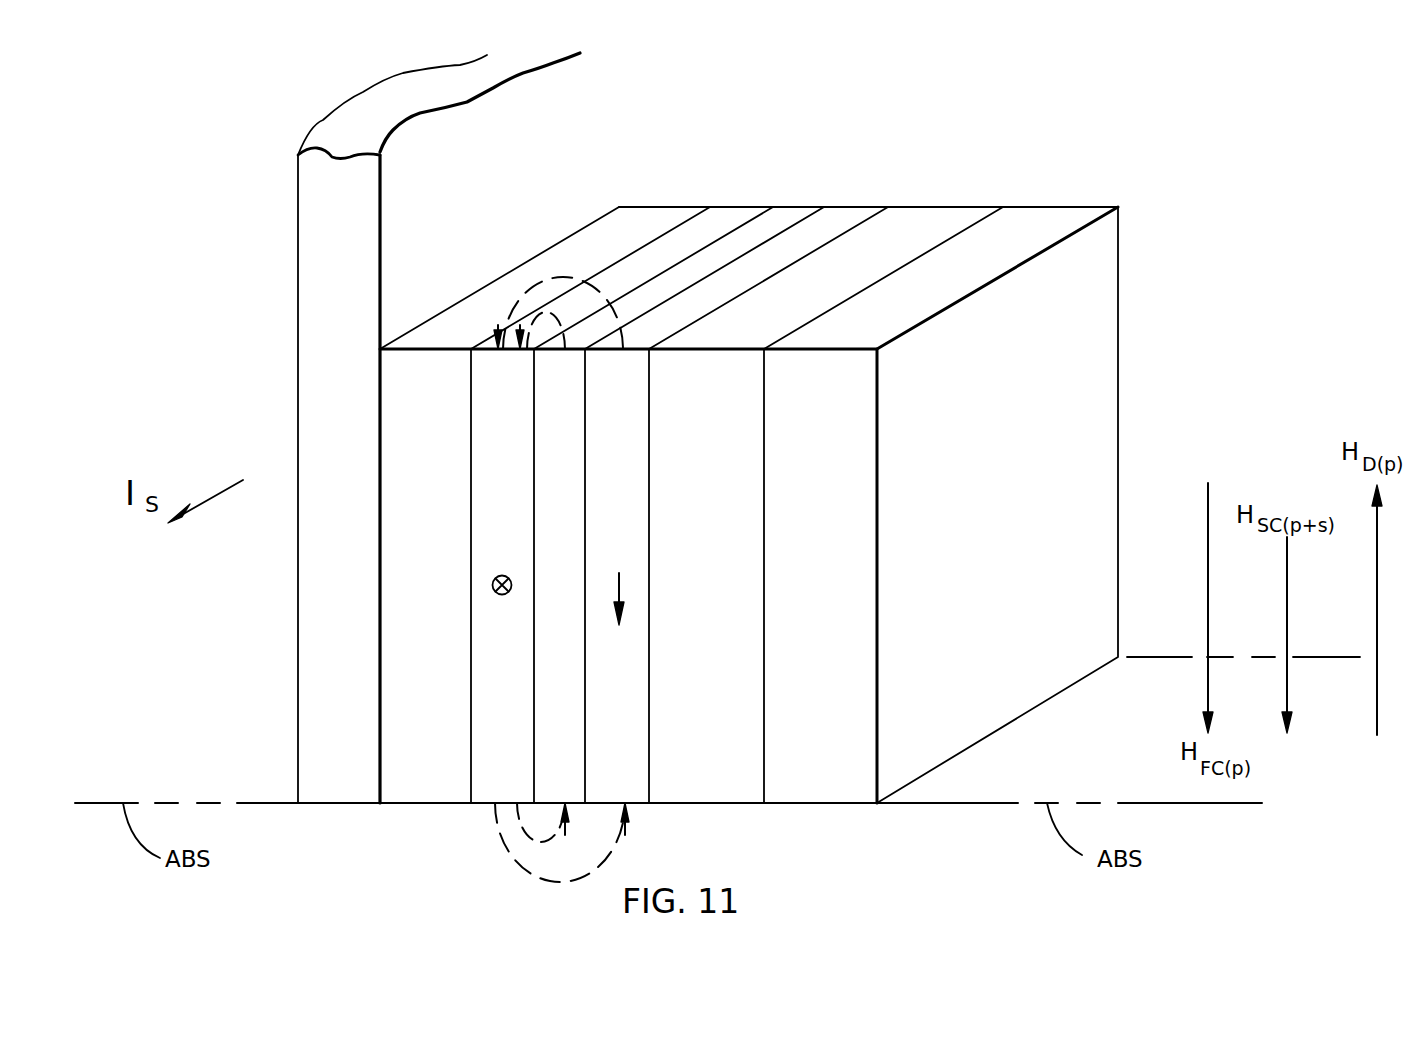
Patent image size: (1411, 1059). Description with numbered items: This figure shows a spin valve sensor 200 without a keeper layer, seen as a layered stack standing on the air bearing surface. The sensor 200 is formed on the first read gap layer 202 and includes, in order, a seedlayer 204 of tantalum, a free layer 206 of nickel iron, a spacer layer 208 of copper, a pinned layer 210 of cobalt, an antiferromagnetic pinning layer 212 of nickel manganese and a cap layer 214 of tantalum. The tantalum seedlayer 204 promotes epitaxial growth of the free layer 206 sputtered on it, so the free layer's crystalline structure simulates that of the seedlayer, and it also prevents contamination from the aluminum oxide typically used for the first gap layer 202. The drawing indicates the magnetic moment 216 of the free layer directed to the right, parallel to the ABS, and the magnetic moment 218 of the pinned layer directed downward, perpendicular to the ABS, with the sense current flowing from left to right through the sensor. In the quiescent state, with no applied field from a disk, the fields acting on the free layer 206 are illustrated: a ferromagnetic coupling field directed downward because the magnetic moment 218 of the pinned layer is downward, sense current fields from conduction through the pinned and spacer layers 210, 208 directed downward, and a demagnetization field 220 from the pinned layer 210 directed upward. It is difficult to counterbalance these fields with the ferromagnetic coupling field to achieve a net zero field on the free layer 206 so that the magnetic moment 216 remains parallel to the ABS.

The spin valve sensor 200 is at (1130, 142).
The first read gap layer 202 is at (343, 775).
The seedlayer 204 is at (437, 775).
The free layer 206 is at (498, 652).
The spacer layer 208 is at (562, 688).
The pinned layer 210 is at (633, 775).
The antiferromagnetic pinning layer 212 is at (705, 775).
The cap layer 214 is at (820, 772).
The magnetic moment of the free layer 216 is at (492, 595).
The magnetic moment of the pinned layer 218 is at (619, 590).
The demagnetization field 220 is at (573, 278).